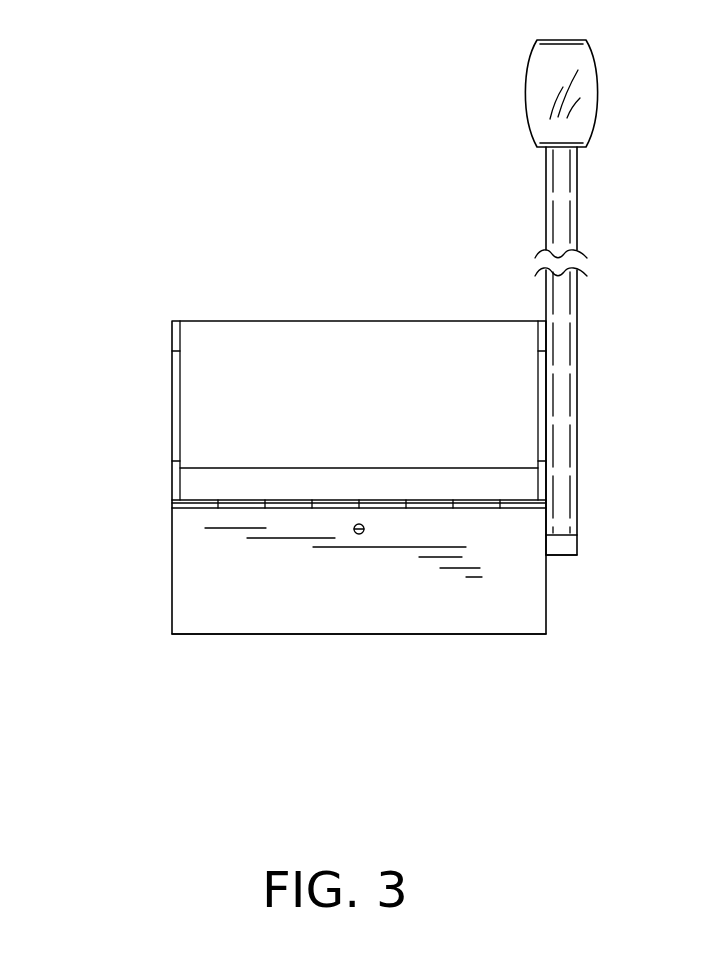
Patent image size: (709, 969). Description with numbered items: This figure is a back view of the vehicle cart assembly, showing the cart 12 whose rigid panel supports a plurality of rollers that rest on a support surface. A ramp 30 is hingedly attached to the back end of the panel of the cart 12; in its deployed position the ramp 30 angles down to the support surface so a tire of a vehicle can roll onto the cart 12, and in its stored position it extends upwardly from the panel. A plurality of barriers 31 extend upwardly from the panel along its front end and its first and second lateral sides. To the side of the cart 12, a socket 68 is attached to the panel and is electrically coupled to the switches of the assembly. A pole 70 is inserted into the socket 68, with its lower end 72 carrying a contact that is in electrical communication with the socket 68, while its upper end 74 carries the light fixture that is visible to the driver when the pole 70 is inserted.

The cart 12 is at (122, 268).
The ramp 30 is at (207, 577).
The barriers 31 is at (180, 388).
The socket 68 is at (578, 539).
The pole 70 is at (577, 238).
The lower end 72 is at (560, 536).
The upper end 74 is at (580, 148).